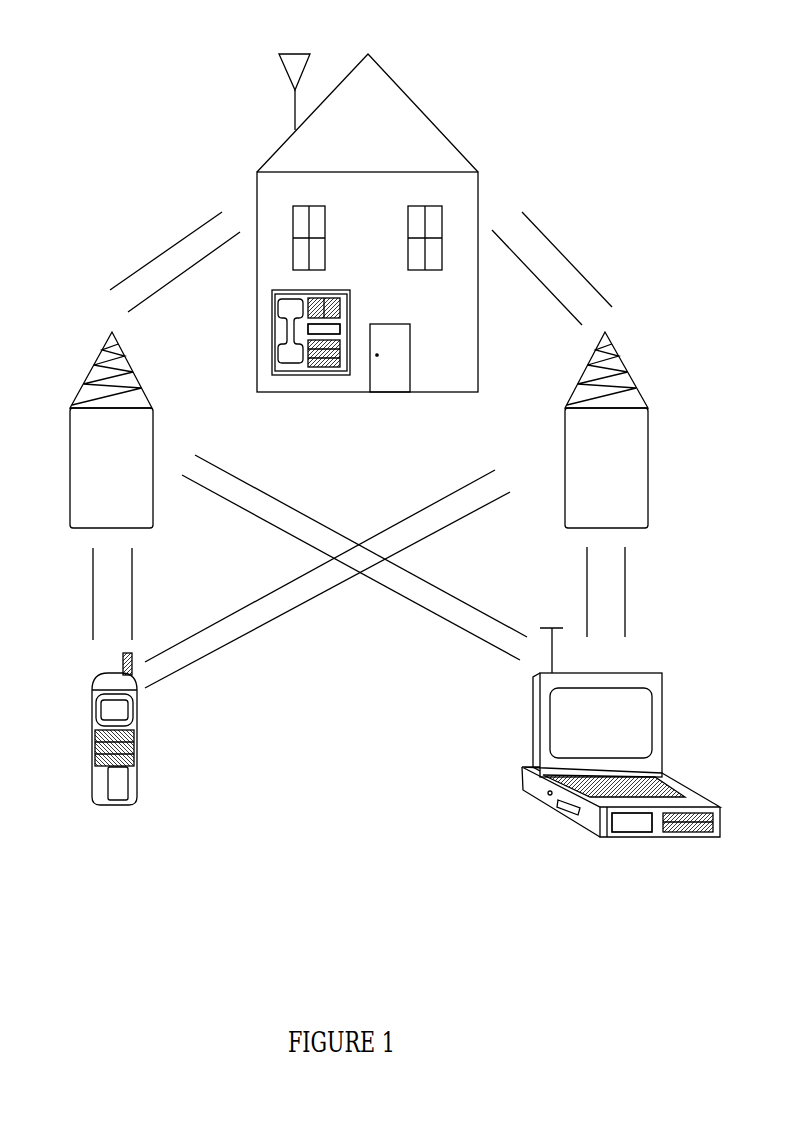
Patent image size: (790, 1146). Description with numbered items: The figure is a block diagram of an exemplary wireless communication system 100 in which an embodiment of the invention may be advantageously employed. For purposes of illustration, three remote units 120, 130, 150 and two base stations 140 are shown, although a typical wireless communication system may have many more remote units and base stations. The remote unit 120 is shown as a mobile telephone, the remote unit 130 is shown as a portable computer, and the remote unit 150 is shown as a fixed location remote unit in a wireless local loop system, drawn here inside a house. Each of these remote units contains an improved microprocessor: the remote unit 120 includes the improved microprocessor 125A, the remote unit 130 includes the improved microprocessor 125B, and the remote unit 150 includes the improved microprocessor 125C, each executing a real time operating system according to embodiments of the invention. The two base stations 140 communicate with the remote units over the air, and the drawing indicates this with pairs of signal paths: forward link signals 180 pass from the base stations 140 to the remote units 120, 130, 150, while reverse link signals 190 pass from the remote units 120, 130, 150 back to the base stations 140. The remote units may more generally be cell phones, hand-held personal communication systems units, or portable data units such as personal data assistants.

The wireless communication system 100 is at (126, 90).
The remote unit 120 is at (92, 685).
The improved microprocessor 125A is at (118, 795).
The improved microprocessor 125B is at (337, 333).
The improved microprocessor 125C is at (635, 823).
The remote unit 130 is at (643, 673).
The base station 140 is at (92, 363).
The remote unit 150 is at (272, 340).
The forward link signals 180 is at (172, 245).
The reverse link signals 190 is at (172, 282).